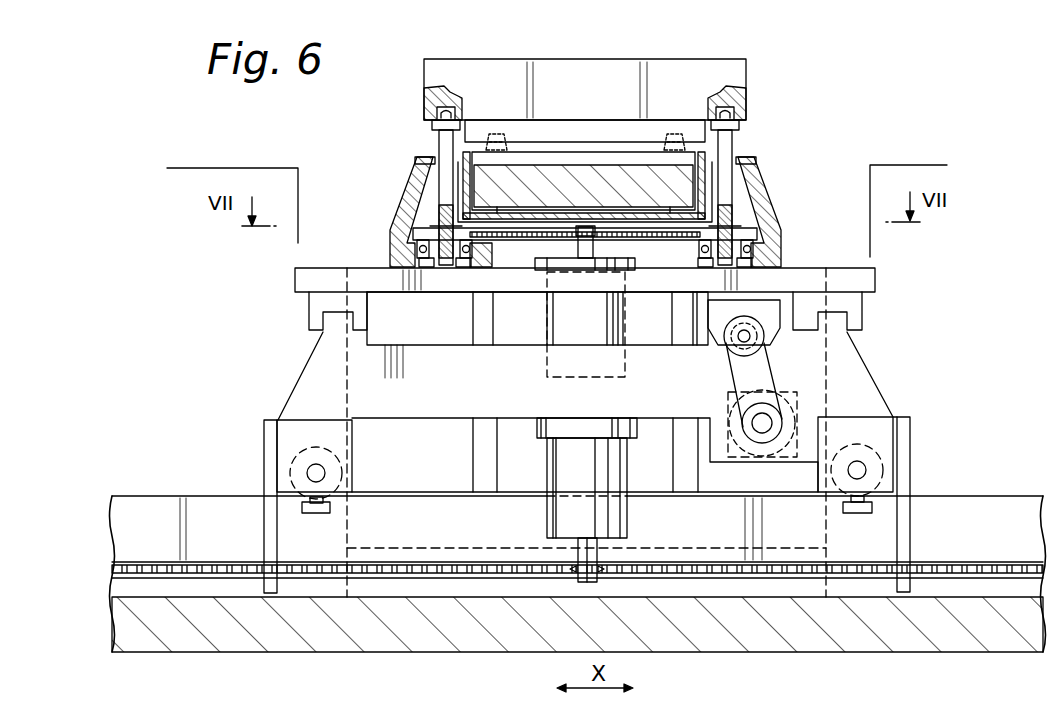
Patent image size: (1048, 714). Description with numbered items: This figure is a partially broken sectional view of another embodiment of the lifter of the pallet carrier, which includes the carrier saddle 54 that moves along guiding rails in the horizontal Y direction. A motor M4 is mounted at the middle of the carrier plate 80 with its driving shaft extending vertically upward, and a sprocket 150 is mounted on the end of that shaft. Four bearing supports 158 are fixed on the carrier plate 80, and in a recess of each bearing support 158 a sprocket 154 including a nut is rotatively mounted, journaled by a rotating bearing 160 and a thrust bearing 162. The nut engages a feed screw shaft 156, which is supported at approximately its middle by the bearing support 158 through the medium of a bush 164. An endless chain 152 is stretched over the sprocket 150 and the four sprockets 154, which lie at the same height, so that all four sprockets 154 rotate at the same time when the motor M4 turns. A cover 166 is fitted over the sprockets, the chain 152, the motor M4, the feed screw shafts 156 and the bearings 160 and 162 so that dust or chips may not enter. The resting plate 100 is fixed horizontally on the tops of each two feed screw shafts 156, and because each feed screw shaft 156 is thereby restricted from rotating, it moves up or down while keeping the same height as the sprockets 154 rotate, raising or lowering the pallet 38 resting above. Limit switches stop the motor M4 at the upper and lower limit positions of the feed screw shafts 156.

The pallet 38 is at (670, 70).
The resting plate 100 is at (738, 127).
The feed screw shaft 156 is at (723, 147).
The bush 164 is at (752, 160).
The sprocket 154 is at (781, 243).
The bearing support 158 is at (735, 232).
The rotating bearing 160 is at (781, 250).
The thrust bearing 162 is at (745, 270).
The carrier plate 80 is at (870, 277).
The carrier saddle 54 is at (288, 281).
The cover 166 is at (527, 228).
The endless chain 152 is at (637, 237).
The sprocket 150 is at (600, 237).
The motor M4 is at (572, 323).